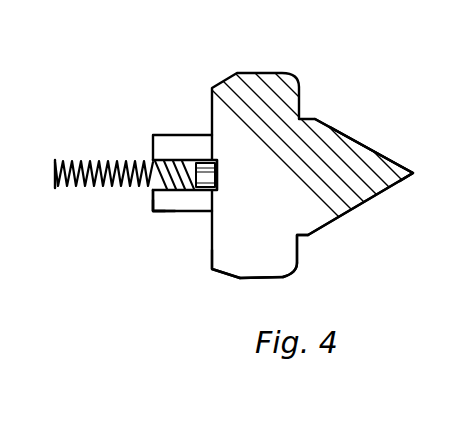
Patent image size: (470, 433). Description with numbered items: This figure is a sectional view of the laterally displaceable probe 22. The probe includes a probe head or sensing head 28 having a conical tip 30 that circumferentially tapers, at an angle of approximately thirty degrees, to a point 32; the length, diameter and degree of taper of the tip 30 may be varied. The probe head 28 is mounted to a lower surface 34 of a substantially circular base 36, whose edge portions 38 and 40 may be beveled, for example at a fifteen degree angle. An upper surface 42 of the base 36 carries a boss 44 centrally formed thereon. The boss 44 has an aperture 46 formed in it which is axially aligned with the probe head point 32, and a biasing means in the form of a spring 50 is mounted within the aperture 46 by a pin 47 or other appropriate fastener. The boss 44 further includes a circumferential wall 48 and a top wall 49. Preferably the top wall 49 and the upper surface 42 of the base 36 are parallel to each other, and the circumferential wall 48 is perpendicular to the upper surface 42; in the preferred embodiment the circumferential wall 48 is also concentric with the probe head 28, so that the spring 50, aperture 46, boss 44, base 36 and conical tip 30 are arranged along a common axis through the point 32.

The laterally displaceable probe 22 is at (301, 54).
The probe head 28 is at (335, 128).
The conical tip 30 is at (352, 167).
The point 32 is at (413, 175).
The lower surface 34 is at (300, 252).
The base 36 is at (250, 273).
The edge portion 38 is at (288, 274).
The edge portion 40 is at (213, 273).
The upper surface 42 is at (212, 245).
The boss 44 is at (185, 135).
The aperture 46 is at (150, 195).
The pin 47 is at (152, 212).
The circumferential wall 48 is at (188, 212).
The top wall 49 is at (150, 158).
The spring 50 is at (55, 157).